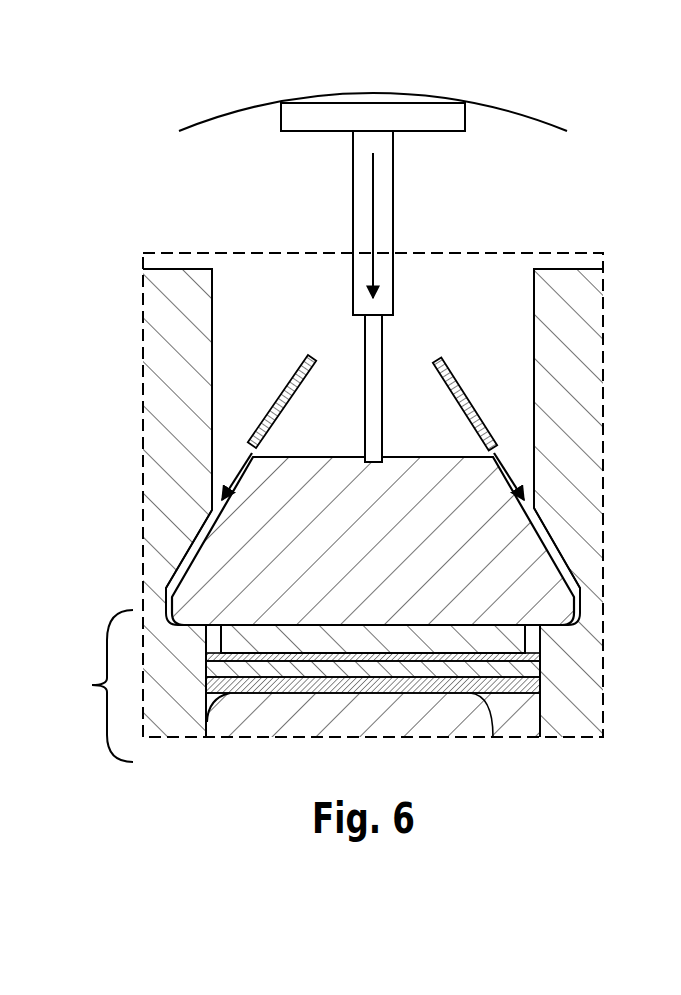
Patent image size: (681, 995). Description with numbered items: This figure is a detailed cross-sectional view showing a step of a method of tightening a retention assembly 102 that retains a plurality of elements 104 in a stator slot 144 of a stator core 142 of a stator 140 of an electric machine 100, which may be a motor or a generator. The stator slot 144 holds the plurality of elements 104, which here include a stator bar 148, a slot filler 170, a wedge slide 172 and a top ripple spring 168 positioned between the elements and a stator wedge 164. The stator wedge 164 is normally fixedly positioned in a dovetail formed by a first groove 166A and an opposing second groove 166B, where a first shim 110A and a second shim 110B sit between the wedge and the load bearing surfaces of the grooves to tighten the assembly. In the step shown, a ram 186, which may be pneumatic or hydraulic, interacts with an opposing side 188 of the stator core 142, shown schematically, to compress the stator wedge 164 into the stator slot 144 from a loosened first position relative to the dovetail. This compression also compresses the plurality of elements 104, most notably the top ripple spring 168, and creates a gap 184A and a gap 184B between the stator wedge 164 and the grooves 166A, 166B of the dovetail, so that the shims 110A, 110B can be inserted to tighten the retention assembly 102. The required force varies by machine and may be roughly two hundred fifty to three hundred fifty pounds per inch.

The electric machine 100 is at (503, 202).
The retention assembly 102 is at (331, 320).
The plurality of elements 104 is at (86, 686).
The first shim 110A is at (271, 410).
The second shim 110B is at (477, 397).
The stator 140 is at (176, 264).
The stator core 142 is at (195, 364).
The stator slot 144 is at (535, 340).
The stator bar 148 is at (453, 730).
The stator wedge 164 is at (427, 472).
The first groove 166A is at (202, 520).
The second groove 166B is at (550, 528).
The top ripple spring 168 is at (205, 658).
The slot filler 170 is at (523, 668).
The wedge slide 172 is at (482, 640).
The gap 184A is at (193, 548).
The gap 184B is at (553, 552).
The ram 186 is at (383, 183).
The opposing side 188 is at (540, 118).